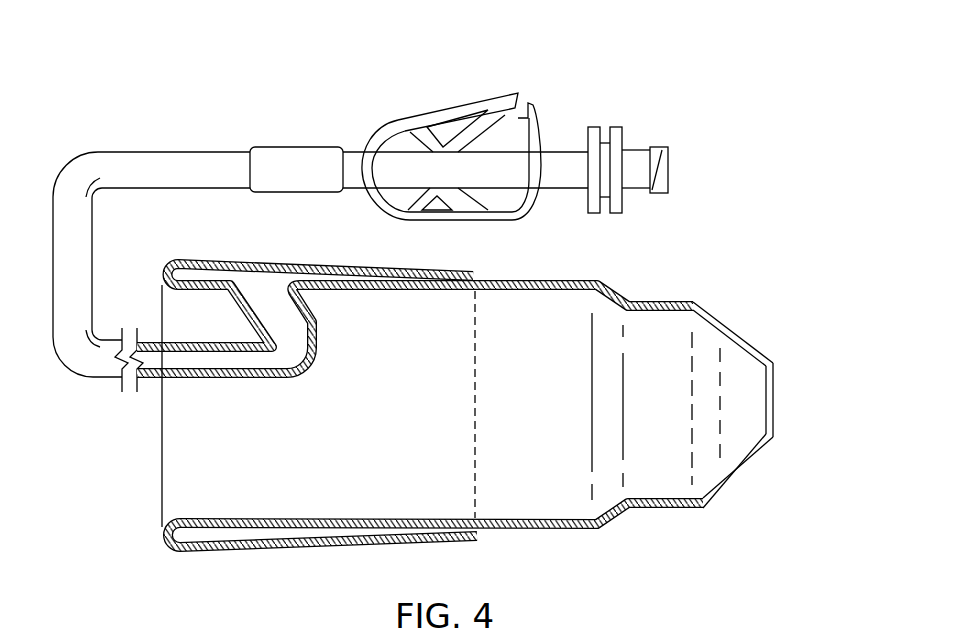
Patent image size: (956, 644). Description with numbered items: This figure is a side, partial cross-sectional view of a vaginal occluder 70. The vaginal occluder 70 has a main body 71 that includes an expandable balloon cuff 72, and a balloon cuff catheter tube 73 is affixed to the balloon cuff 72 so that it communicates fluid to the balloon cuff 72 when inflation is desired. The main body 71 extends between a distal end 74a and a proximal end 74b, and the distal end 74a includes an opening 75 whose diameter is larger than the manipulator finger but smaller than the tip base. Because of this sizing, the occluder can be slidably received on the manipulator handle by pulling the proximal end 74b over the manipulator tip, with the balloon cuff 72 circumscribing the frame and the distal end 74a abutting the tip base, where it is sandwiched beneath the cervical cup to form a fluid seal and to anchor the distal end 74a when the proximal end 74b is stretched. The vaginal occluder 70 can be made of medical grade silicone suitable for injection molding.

The vaginal occluder 70 is at (630, 269).
The main body 71 is at (572, 533).
The expandable balloon cuff 72 is at (220, 276).
The balloon cuff catheter tube 73 is at (128, 168).
The distal end 74a is at (762, 353).
The proximal end 74b is at (162, 480).
The opening 75 is at (750, 398).